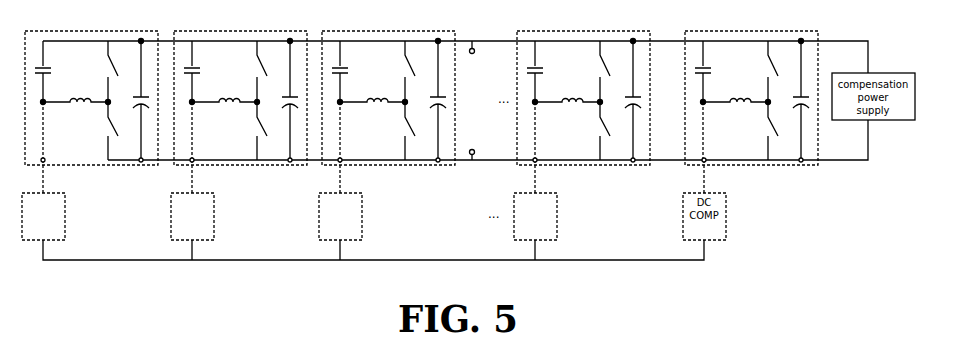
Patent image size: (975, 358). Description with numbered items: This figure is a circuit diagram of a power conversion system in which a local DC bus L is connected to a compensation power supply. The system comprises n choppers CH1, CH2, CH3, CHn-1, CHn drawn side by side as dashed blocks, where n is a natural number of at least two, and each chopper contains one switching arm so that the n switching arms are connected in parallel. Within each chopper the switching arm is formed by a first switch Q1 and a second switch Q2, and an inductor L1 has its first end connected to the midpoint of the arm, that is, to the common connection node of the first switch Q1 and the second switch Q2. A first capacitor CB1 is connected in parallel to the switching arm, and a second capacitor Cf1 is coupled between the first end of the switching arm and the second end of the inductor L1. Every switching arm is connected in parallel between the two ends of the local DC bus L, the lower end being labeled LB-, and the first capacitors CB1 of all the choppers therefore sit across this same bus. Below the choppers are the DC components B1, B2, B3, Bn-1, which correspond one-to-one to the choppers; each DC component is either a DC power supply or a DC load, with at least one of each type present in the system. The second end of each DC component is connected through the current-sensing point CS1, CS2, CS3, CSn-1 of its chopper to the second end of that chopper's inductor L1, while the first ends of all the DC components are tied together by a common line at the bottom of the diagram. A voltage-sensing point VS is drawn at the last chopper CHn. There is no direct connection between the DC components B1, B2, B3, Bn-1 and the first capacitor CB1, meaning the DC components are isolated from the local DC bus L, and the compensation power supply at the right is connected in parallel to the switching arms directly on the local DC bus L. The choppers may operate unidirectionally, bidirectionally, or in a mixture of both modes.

The chopper CH1 is at (91, 91).
The chopper CH2 is at (240, 91).
The chopper CH3 is at (388, 91).
The chopper CHn-1 is at (583, 91).
The chopper CHn is at (751, 91).
The second capacitor Cf1 is at (382, 71).
The first switch Q1 is at (433, 71).
The second switch Q2 is at (433, 131).
The inductor L1 is at (406, 94).
The first capacitor CB1 is at (462, 101).
The local DC bus L is at (479, 93).
The negative end of local DC bus LB- is at (484, 150).
The first current sensor CS1 is at (57, 175).
The second current sensor CS2 is at (206, 175).
The third current sensor CS3 is at (354, 175).
The (n-1)th current sensor CSn-1 is at (514, 175).
The voltage sensor VS is at (694, 175).
The DC component B1 is at (54, 216).
The DC component B2 is at (203, 216).
The DC component B3 is at (351, 216).
The DC component Bn-1 is at (552, 216).